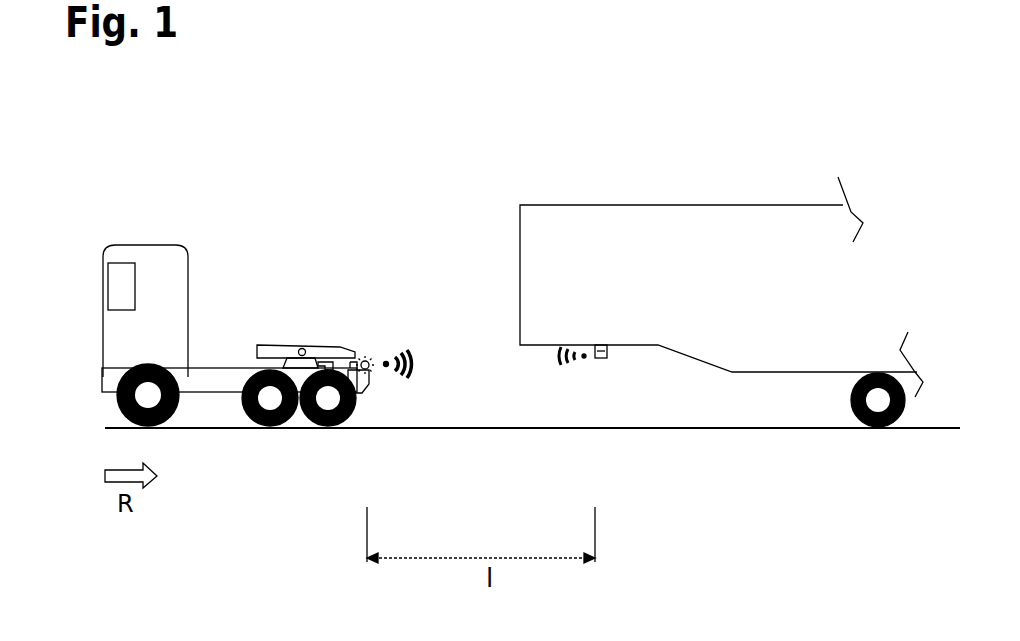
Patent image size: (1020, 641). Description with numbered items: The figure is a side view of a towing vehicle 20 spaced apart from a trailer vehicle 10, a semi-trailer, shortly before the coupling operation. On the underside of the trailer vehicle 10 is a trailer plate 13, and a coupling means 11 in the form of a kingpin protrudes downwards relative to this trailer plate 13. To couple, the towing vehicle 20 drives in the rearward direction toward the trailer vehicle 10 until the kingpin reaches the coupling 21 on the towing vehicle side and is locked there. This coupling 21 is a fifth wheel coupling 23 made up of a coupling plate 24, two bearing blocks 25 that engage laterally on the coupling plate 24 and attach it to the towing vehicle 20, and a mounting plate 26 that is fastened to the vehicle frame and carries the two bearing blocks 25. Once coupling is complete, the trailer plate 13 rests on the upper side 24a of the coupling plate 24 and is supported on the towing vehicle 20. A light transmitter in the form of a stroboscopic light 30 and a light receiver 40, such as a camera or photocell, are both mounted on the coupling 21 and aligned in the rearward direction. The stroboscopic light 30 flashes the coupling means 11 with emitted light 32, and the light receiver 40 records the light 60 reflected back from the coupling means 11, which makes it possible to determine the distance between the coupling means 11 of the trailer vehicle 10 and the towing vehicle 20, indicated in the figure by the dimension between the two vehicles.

The trailer vehicle 10 is at (610, 184).
The coupling means 11 is at (607, 356).
The trailer plate 13 is at (645, 346).
The towing vehicle 20 is at (98, 228).
The coupling on the towing vehicle side 21 is at (320, 260).
The fifth wheel coupling 23 is at (268, 310).
The coupling plate 24 is at (345, 346).
The upper side of the coupling plate 24a is at (290, 345).
The bearing blocks 25 is at (257, 356).
The mounting plate 26 is at (248, 370).
The stroboscopic light 30 is at (369, 369).
The emitted light 32 is at (415, 366).
The light receiver 40 is at (335, 363).
The reflected light 60 is at (555, 362).